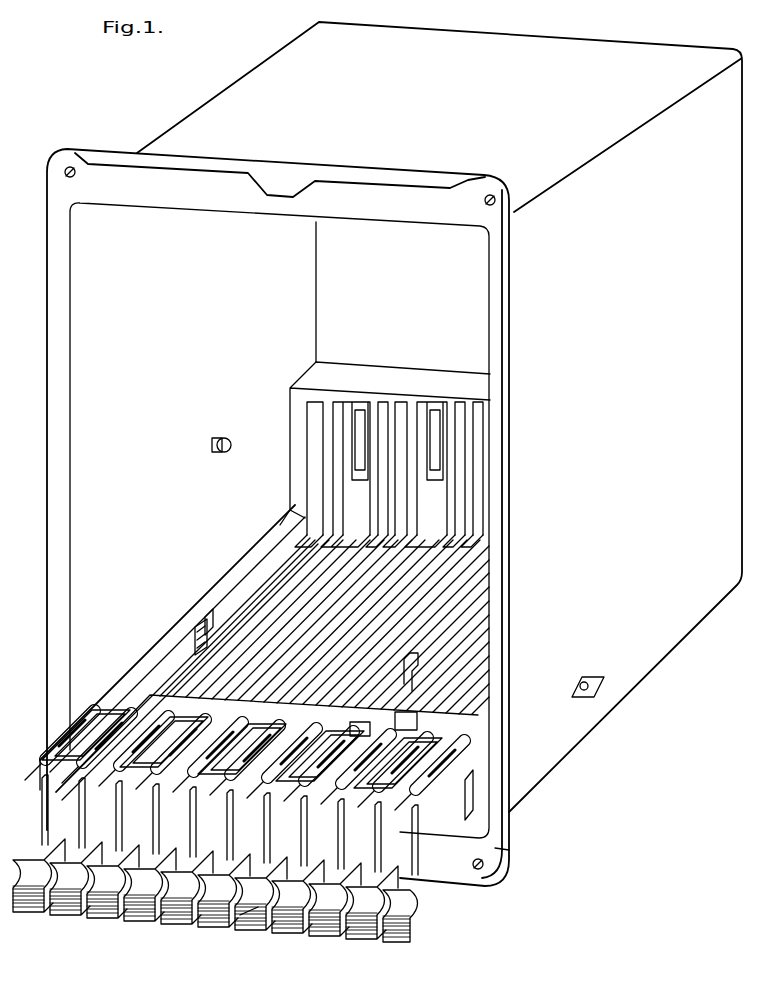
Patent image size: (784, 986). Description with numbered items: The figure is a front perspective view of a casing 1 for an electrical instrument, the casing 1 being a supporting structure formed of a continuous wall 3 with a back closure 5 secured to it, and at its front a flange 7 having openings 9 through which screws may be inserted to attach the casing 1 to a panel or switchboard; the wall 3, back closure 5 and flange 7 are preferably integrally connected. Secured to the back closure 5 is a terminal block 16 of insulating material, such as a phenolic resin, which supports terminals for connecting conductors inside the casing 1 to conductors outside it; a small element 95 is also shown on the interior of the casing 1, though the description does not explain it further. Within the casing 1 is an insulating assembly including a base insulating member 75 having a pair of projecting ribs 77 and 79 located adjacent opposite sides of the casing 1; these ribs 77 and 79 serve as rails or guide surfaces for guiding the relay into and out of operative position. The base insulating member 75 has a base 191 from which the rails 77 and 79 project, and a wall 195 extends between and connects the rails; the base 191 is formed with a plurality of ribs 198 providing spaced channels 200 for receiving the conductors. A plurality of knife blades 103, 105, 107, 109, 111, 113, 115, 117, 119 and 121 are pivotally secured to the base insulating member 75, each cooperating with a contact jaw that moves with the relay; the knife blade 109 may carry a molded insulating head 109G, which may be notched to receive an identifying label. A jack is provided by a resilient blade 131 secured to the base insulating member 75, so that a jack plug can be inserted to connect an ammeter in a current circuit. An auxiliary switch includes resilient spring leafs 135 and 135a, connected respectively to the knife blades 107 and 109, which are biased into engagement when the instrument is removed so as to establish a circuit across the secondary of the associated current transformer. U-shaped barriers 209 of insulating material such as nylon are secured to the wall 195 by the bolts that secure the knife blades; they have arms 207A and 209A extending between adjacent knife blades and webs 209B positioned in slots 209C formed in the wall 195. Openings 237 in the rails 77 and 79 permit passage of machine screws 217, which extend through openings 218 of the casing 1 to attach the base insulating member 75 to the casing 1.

The casing 1 is at (688, 628).
The continuous wall 3 is at (70, 458).
The back closure 5 is at (358, 238).
The flange 7 is at (495, 848).
The openings 9 is at (68, 165).
The terminal block 16 is at (300, 394).
The base insulating member 75 is at (148, 658).
The rib 77 is at (250, 562).
The rib 79 is at (474, 782).
The fastener 95 is at (222, 452).
The knife blade 103 is at (396, 852).
The knife blade 105 is at (357, 840).
The knife blade 107 is at (320, 837).
The knife blade 109 is at (283, 834).
The head 109G is at (250, 925).
The knife blade 111 is at (246, 831).
The knife blade 113 is at (209, 828).
The knife blade 115 is at (172, 825).
The knife blade 117 is at (135, 822).
The knife blade 119 is at (98, 819).
The knife blade 121 is at (61, 816).
The resilient blade 131 is at (416, 722).
The resilient spring leaf 135 is at (400, 673).
The resilient spring leaf 135a is at (358, 722).
The base 191 is at (300, 565).
The wall 195 is at (145, 690).
The ribs 198 is at (330, 592).
The channels 200 is at (440, 598).
The arm 207A is at (292, 790).
The U-shaped barrier 209 is at (247, 757).
The arm 209A is at (324, 775).
The web 209B is at (300, 722).
The slot 209C is at (220, 712).
The machine screw 217 is at (215, 625).
The opening 218 is at (578, 689).
The opening 237 is at (195, 645).